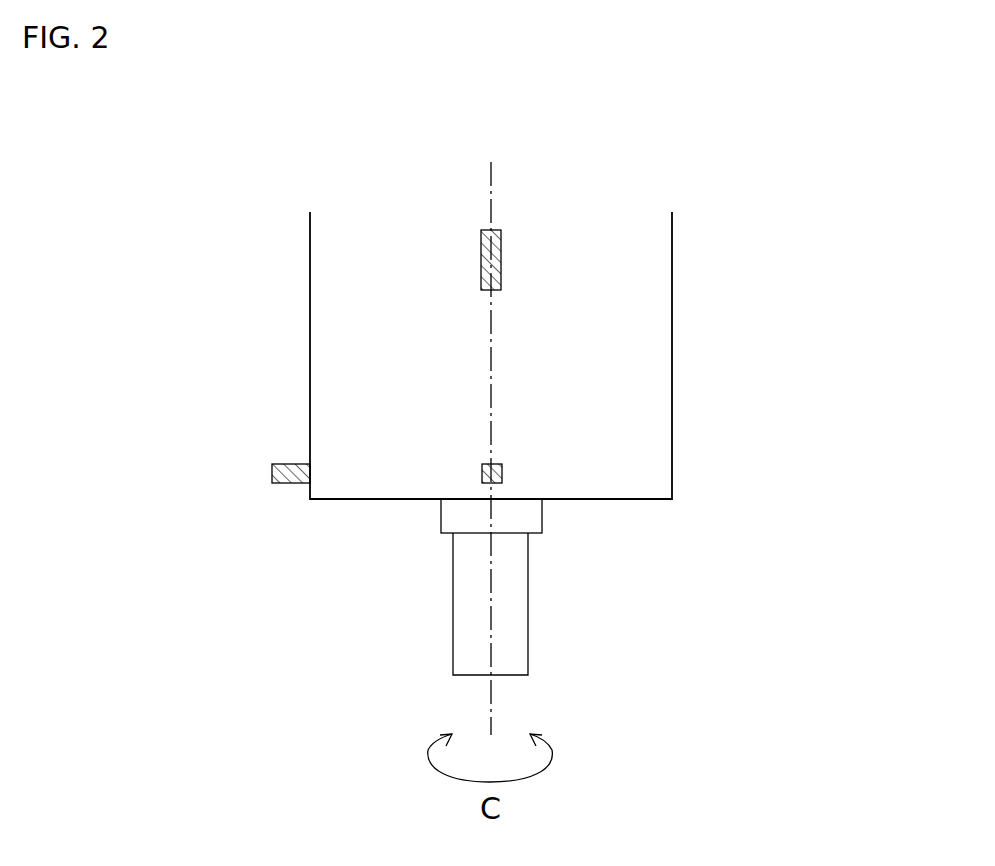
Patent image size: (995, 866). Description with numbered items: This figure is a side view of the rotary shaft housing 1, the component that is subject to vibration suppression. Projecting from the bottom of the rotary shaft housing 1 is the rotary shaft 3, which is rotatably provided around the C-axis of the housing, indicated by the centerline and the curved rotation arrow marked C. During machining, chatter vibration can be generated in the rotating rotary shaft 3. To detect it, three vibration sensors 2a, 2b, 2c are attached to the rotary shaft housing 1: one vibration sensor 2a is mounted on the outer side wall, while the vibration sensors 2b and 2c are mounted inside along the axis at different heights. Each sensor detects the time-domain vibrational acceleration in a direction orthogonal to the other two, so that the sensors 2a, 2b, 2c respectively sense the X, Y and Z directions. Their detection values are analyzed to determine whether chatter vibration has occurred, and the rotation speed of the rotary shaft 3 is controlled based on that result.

The rotary shaft housing 1 is at (323, 322).
The vibration sensor 2a is at (272, 472).
The vibration sensor 2b is at (502, 474).
The vibration sensor 2c is at (501, 257).
The rotary shaft 3 is at (465, 601).